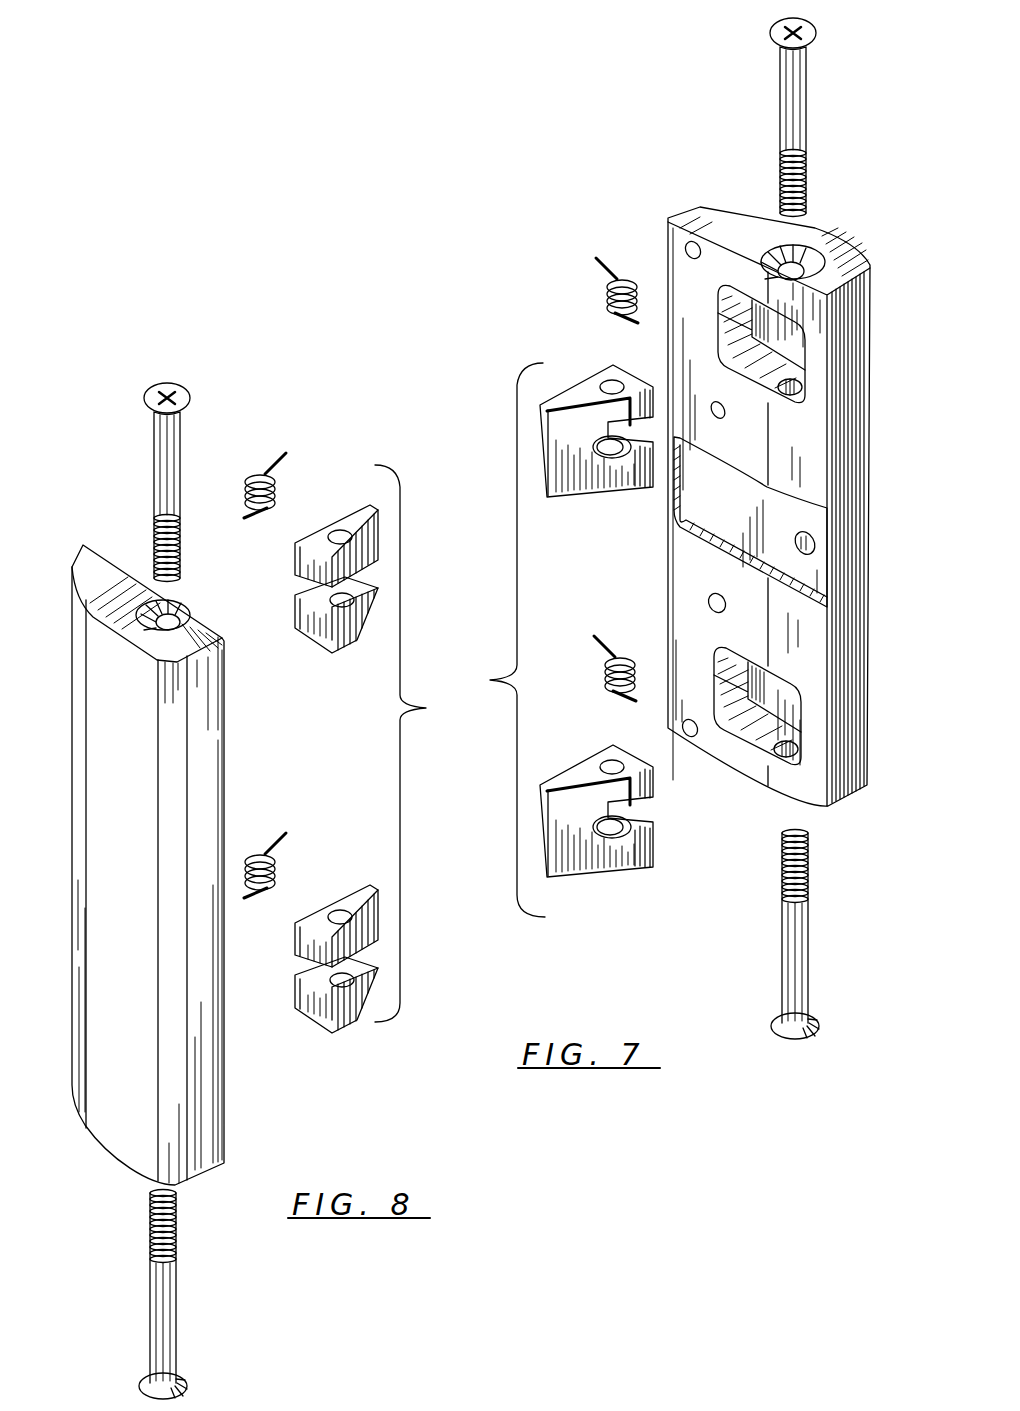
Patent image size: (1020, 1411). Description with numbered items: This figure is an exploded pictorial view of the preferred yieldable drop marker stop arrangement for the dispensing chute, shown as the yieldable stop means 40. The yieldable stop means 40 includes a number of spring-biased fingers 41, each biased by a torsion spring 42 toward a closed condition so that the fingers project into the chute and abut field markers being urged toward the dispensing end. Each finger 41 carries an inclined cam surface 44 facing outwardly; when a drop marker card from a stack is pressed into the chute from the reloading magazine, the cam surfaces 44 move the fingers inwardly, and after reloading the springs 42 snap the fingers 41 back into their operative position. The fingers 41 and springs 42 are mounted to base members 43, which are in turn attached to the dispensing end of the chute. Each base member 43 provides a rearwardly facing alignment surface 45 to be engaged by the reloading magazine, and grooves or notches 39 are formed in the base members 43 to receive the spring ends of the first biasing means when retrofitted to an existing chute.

In FIG. 7, the notch 39 is at (698, 507).
In FIG. 7, the yieldable stop means 40 is at (548, 335).
In FIG. 8, the yieldable stop means 40 is at (205, 478).
In FIG. 7, the finger 41 is at (572, 398).
In FIG. 8, the finger 41 is at (335, 650).
In FIG. 7, the torsion spring 42 is at (606, 302).
In FIG. 8, the torsion spring 42 is at (282, 490).
In FIG. 7, the base member 43 is at (760, 506).
In FIG. 8, the base member 43 is at (155, 865).
In FIG. 7, the inclined cam surface 44 is at (577, 497).
In FIG. 8, the inclined cam surface 44 is at (363, 637).
In FIG. 7, the alignment surface 45 is at (847, 548).
In FIG. 8, the alignment surface 45 is at (213, 800).